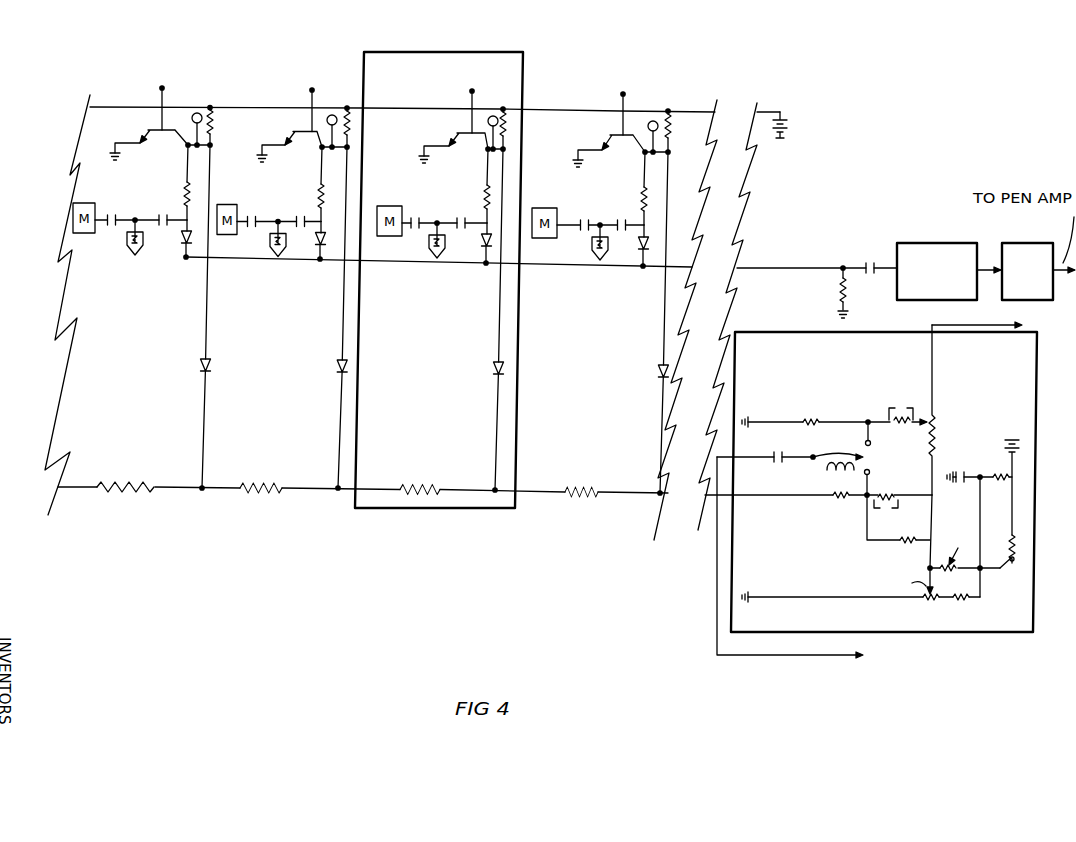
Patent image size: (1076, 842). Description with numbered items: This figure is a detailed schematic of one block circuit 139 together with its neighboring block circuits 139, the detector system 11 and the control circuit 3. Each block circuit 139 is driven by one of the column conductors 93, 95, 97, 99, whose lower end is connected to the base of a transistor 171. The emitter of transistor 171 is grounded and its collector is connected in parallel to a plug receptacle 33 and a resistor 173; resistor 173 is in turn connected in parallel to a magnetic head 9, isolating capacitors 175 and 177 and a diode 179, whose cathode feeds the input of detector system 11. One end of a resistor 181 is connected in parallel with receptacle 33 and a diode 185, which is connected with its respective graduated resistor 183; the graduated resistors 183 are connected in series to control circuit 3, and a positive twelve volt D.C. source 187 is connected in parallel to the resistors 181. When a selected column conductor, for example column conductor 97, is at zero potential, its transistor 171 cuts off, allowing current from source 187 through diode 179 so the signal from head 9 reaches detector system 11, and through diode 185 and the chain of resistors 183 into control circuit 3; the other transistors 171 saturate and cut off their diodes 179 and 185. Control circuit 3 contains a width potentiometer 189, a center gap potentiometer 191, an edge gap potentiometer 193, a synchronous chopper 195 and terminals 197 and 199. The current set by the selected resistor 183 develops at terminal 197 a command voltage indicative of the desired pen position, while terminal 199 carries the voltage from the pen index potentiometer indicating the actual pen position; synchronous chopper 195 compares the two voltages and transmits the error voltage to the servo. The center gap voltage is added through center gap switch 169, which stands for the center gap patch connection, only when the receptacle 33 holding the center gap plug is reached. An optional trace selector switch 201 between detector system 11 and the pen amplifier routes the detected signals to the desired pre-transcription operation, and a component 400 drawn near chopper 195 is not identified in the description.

The control circuit 3 is at (1037, 423).
The magnetic head 9 is at (128, 240).
The detector system 11 is at (930, 243).
The plug receptacle 33 is at (489, 118).
The channel input terminal 93 is at (162, 86).
The channel input terminal 95 is at (312, 88).
The column conductor 97 is at (472, 89).
The channel input terminal 99 is at (623, 92).
The block circuit 139 is at (458, 52).
The center gap switch 169 is at (1013, 562).
The transistor 171 is at (150, 129).
The resistor 173 is at (185, 190).
The isolating capacitor 175 is at (123, 209).
The isolating capacitor 177 is at (166, 212).
The diode 179 is at (182, 240).
The resistor 181 is at (213, 128).
The graduated resistor 183 is at (140, 484).
The diode 185 is at (213, 364).
The D.C. source 187 is at (780, 110).
The width potentiometer 189 is at (928, 440).
The center gap potentiometer 191 is at (966, 526).
The edge gap potentiometer 193 is at (922, 598).
The synchronous chopper 195 is at (812, 452).
The terminal 197 is at (870, 472).
The terminal 199 is at (866, 441).
The trace selector switch 201 is at (1027, 243).
The relay coil 400 is at (815, 483).